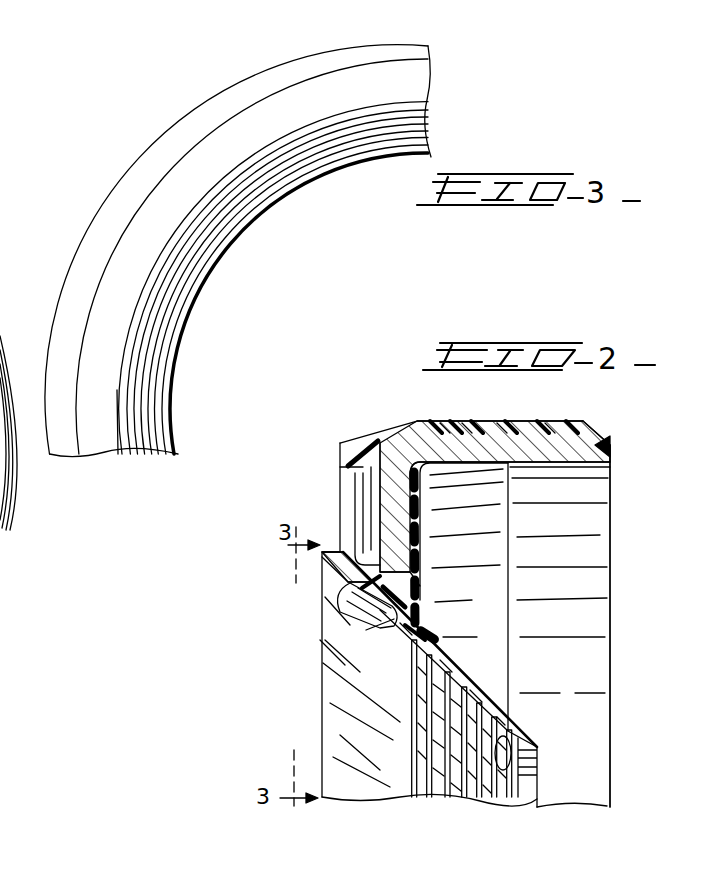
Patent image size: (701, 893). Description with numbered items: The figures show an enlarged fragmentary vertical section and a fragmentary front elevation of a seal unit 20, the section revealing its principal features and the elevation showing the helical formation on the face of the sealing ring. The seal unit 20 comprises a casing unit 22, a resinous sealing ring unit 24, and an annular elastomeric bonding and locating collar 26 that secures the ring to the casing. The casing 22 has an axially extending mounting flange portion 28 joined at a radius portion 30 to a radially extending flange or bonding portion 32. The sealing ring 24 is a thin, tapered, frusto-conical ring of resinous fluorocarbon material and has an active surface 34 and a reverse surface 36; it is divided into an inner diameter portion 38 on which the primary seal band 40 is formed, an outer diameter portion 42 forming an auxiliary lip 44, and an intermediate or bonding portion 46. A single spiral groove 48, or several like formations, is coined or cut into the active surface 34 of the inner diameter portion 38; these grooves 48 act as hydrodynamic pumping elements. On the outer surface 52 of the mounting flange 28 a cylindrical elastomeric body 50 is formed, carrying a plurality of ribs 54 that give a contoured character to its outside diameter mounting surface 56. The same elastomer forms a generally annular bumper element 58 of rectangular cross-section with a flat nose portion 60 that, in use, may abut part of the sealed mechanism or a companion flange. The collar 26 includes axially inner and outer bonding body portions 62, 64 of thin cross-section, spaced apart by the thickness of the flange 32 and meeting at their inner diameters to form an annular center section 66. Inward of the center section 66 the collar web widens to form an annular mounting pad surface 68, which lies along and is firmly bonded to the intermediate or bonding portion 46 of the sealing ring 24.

In FIG. 3, the seal unit 20 is at (147, 124).
In FIG. 2, the seal unit 20 is at (636, 484).
In FIG. 2, the casing unit 22 is at (500, 475).
In FIG. 3, the resinous sealing ring unit 24 is at (312, 192).
In FIG. 2, the resinous sealing ring unit 24 is at (455, 661).
In FIG. 2, the annular elastomeric bonding and locating collar 26 is at (441, 606).
In FIG. 2, the axially extending mounting flange portion 28 is at (581, 430).
In FIG. 2, the radius portion 30 is at (400, 446).
In FIG. 2, the radially extending flange or bonding portion 32 is at (405, 526).
In FIG. 2, the active surface 34 is at (396, 679).
In FIG. 2, the reverse surface 36 is at (478, 684).
In FIG. 2, the inner diameter portion 38 is at (504, 734).
In FIG. 3, the primary seal band 40 is at (249, 207).
In FIG. 2, the primary seal band 40 is at (470, 722).
In FIG. 2, the outer diameter portion 42 is at (348, 591).
In FIG. 3, the auxiliary lip 44 is at (105, 290).
In FIG. 2, the auxiliary lip 44 is at (313, 581).
In FIG. 2, the intermediate or bonding portion 46 is at (397, 613).
In FIG. 3, the spiral groove 48 is at (178, 308).
In FIG. 2, the spiral groove 48 is at (503, 771).
In FIG. 2, the cylindrical elastomeric body 50 is at (452, 402).
In FIG. 2, the outer surface 52 is at (556, 426).
In FIG. 2, the ribs 54 is at (506, 421).
In FIG. 2, the outside diameter mounting surface 56 is at (471, 420).
In FIG. 2, the annular bumper element 58 is at (356, 442).
In FIG. 2, the flat nose portion 60 is at (340, 458).
In FIG. 2, the axially inner bonding body portion 62 is at (420, 499).
In FIG. 2, the axially outer bonding body portion 64 is at (377, 522).
In FIG. 2, the annular center section 66 is at (412, 591).
In FIG. 2, the annular mounting pad surface 68 is at (369, 632).